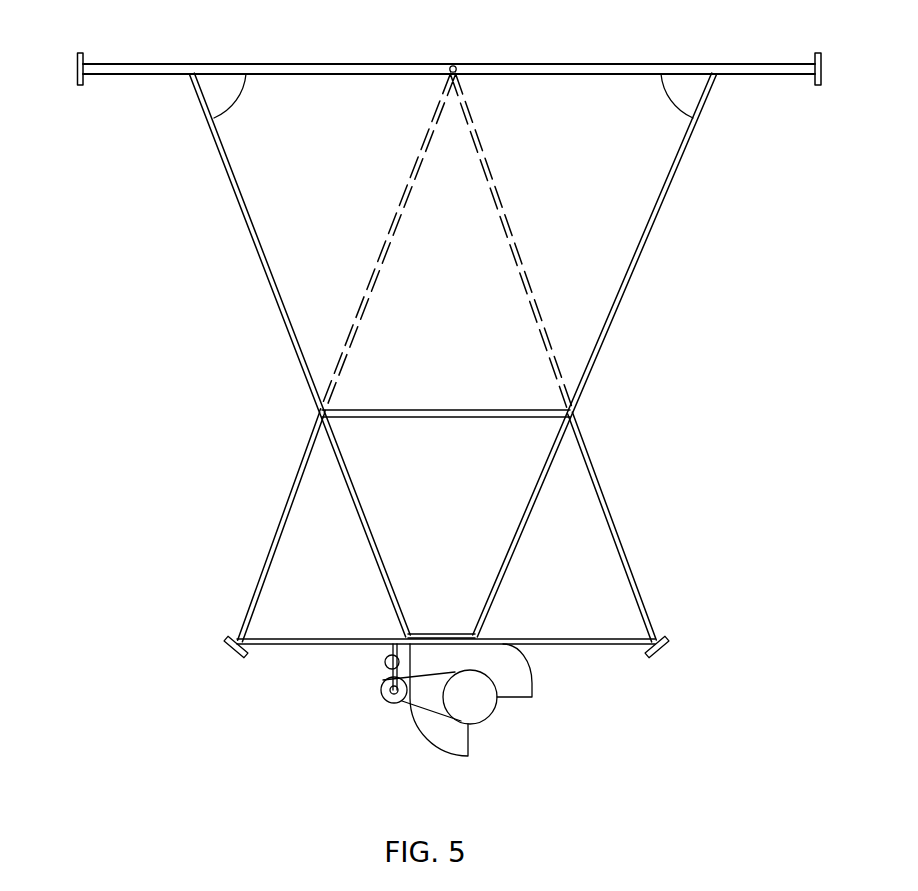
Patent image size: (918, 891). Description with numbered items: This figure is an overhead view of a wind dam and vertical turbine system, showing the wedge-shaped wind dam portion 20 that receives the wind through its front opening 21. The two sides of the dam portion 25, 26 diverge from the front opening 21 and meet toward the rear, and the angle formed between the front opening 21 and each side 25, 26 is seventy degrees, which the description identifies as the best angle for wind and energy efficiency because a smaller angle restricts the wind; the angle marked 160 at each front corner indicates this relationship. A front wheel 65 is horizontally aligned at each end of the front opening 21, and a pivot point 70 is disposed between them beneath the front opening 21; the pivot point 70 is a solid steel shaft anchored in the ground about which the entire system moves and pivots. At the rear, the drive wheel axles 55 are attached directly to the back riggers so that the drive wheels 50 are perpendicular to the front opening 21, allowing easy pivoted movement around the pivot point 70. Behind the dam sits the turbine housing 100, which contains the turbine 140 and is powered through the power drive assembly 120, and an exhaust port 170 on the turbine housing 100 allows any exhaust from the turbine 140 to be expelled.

The wind dam portion 20 is at (432, 265).
The front opening 21 is at (303, 63).
The side of the dam portion 25 is at (650, 243).
The side of the dam portion 26 is at (232, 187).
The drive wheels 50 is at (225, 646).
The drive wheel axles 55 is at (240, 612).
The front wheel 65 is at (77, 82).
The pivot point 70 is at (455, 65).
The turbine housing 100 is at (548, 694).
The power drive assembly 120 is at (385, 681).
The turbine 140 is at (452, 708).
The angle 160 is at (237, 107).
The exhaust port 170 is at (503, 720).